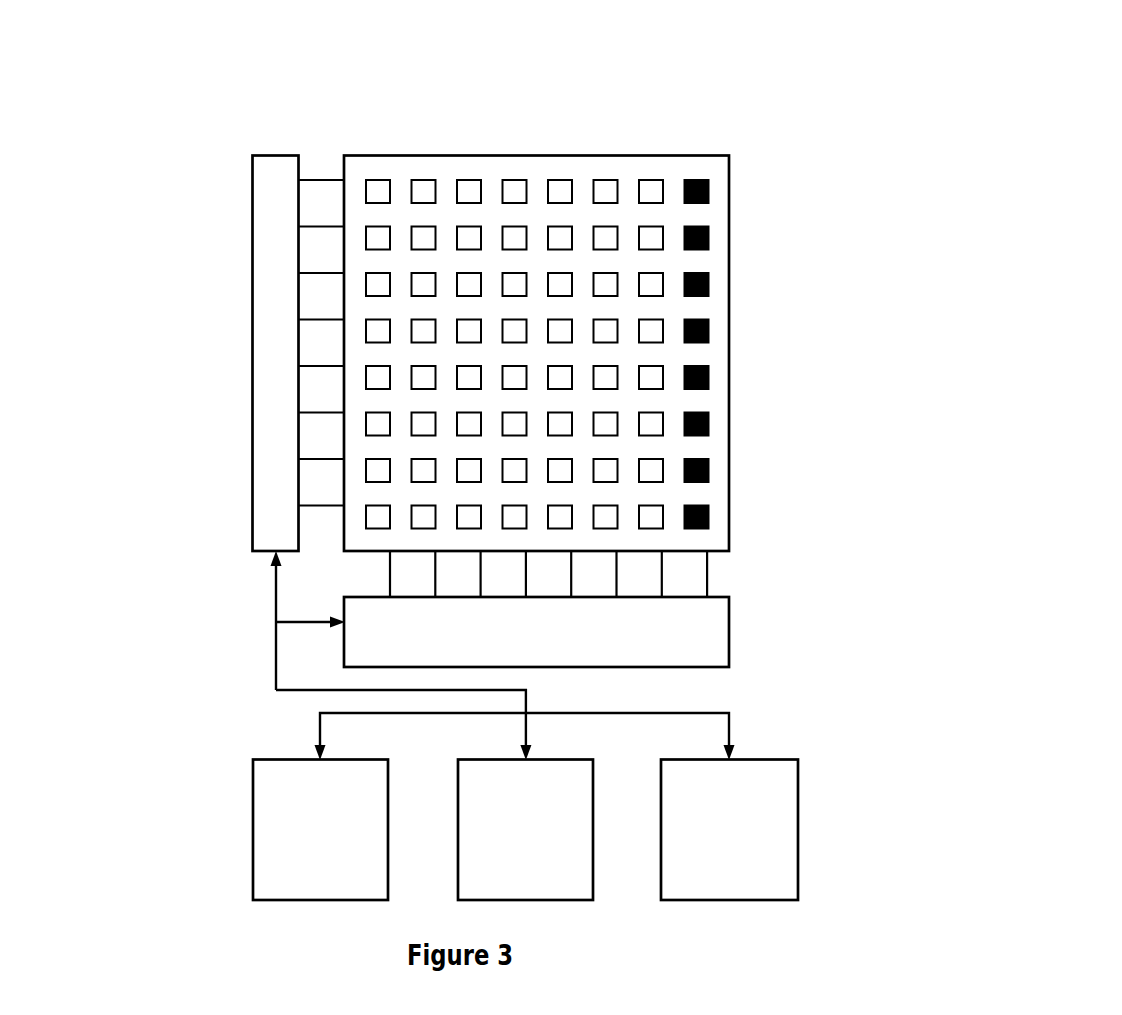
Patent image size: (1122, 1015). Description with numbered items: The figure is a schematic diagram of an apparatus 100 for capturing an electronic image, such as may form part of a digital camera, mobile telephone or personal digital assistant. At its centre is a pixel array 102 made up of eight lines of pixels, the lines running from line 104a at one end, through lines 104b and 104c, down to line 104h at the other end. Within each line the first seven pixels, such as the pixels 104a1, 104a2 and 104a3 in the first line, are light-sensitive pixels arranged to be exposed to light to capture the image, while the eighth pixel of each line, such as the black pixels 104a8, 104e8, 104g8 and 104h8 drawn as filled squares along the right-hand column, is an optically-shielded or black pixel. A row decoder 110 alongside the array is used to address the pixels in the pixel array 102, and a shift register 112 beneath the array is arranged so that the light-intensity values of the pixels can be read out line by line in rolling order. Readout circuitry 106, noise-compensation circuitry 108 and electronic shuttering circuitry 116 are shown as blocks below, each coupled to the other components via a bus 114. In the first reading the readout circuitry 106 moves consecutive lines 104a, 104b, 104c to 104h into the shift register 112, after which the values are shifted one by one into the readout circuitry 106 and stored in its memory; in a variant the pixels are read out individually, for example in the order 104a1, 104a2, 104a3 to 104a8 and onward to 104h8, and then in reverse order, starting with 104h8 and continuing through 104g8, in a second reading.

The apparatus 100 is at (755, 105).
The pixel array 102 is at (729, 247).
The first line of pixels 104a is at (366, 201).
The second line of pixels 104b is at (366, 247).
The third line of pixels 104c is at (366, 294).
The last line of pixels 104h is at (366, 528).
The first pixel of line a 104a1 is at (366, 182).
The second pixel of line a 104a2 is at (436, 182).
The third pixel of line a 104a3 is at (458, 182).
The black pixel of line a 104a8 is at (684, 182).
The black pixel of line e 104e8 is at (706, 372).
The black pixel of line g 104g8 is at (707, 458).
The black pixel of line h 104h8 is at (707, 506).
The readout circuitry 106 is at (320, 830).
The noise-compensation circuitry 108 is at (525, 830).
The row decoder 110 is at (252, 390).
The shift register 112 is at (536, 609).
The bus 114 is at (276, 641).
The electronic shuttering circuitry 116 is at (729, 830).